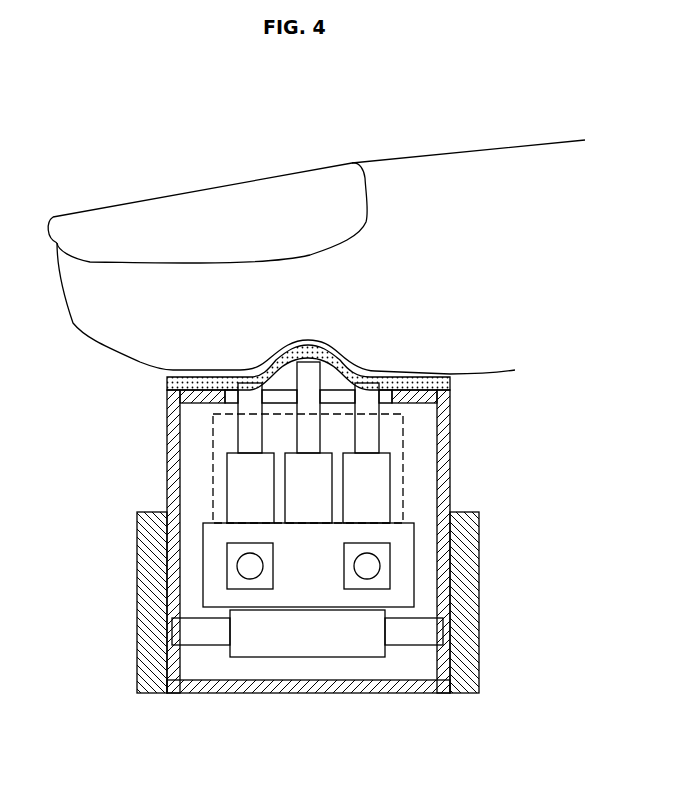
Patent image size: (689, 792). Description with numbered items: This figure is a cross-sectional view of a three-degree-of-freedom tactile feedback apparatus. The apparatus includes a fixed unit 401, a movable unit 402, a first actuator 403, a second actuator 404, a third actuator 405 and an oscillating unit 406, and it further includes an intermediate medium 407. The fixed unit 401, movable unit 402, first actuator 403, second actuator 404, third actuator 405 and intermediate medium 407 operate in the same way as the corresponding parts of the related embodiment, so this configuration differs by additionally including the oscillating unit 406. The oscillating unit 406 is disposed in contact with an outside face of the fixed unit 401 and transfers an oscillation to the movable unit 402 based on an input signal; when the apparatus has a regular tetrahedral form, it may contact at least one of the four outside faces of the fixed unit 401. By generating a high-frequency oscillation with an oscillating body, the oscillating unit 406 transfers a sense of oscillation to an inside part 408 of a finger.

The fixed unit 401 is at (445, 473).
The movable unit 402 is at (213, 442).
The first actuator 403 is at (307, 650).
The second actuator 404 is at (253, 433).
The third actuator 405 is at (238, 566).
The oscillating unit 406 is at (140, 613).
The intermediate medium 407 is at (167, 378).
The inside part of a finger 408 is at (278, 362).